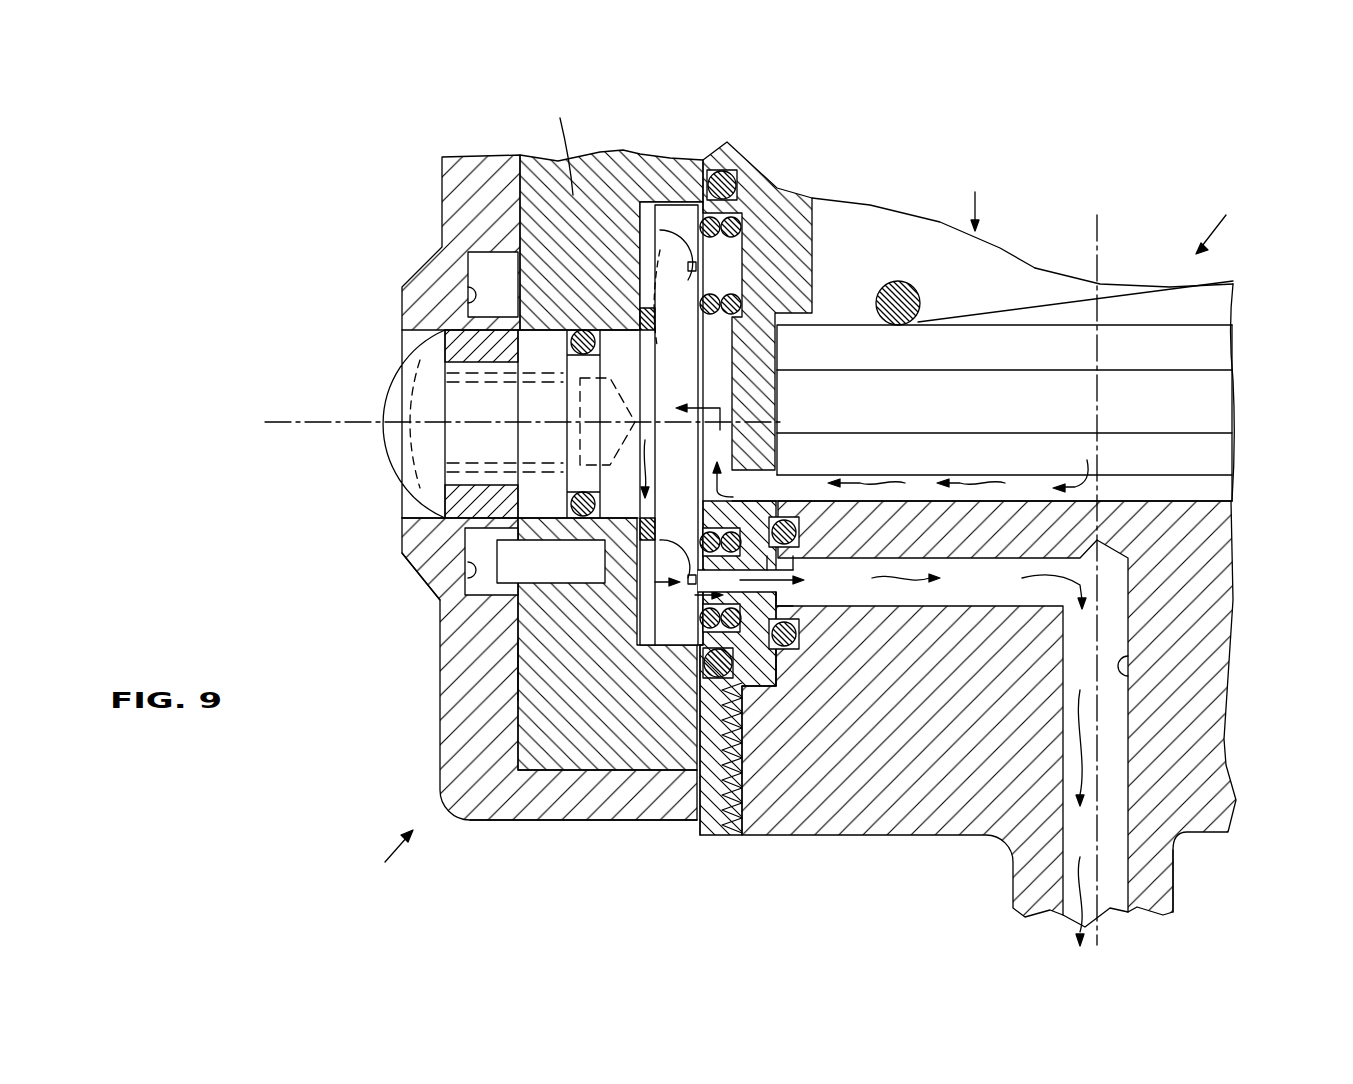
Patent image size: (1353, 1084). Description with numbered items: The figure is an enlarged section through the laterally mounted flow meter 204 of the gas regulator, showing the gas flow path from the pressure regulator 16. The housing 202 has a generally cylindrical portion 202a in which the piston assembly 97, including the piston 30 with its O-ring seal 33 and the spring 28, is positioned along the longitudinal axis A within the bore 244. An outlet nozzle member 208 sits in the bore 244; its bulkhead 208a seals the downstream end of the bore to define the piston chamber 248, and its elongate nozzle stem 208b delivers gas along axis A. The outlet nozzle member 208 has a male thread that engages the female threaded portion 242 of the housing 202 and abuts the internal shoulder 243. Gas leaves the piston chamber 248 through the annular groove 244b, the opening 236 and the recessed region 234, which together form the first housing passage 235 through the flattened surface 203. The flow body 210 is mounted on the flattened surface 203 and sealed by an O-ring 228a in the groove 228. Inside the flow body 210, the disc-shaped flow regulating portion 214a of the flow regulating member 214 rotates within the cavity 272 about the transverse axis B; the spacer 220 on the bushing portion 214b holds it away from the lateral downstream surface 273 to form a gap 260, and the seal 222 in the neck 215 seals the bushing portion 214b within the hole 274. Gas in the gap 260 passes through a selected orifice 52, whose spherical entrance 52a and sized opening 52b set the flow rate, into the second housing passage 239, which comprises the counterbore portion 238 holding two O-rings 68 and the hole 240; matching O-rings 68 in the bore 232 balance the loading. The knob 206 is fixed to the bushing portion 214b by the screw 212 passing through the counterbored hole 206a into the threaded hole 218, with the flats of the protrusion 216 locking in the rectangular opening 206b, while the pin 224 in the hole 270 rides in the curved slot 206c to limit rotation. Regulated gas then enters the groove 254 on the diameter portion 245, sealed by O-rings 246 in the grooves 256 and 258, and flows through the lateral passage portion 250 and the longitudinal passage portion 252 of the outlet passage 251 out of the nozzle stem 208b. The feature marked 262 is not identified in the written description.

The pressure regulator 16 is at (975, 198).
The spring 28 is at (1020, 282).
The piston 30 is at (1215, 348).
The seal 33 is at (1215, 400).
The orifice 52 is at (657, 263).
The spherical entrance 52a is at (657, 643).
The orifice opening 52b is at (687, 590).
The O-ring 68 is at (745, 195).
The piston assembly 97 is at (1218, 221).
The housing 202 is at (795, 255).
The generally cylindrical portion 202a is at (838, 208).
The flattened surface 203 is at (697, 823).
The flow meter 204 is at (379, 859).
The knob 206 is at (433, 745).
The counterbored hole 206a is at (412, 516).
The rectangular opening 206b is at (463, 572).
The curved slot 206c is at (466, 293).
The outlet nozzle member 208 is at (870, 806).
The bulkhead 208a is at (1202, 504).
The nozzle stem 208b is at (1157, 886).
The flow body 210 is at (575, 755).
The screw 212 is at (397, 442).
The flow regulating member 214 is at (683, 205).
The flow regulating portion 214a is at (670, 222).
The bushing portion 214b is at (547, 352).
The neck 215 is at (583, 352).
The protrusion 216 is at (463, 415).
The threaded hole 218 is at (417, 467).
The spacer 220 is at (648, 282).
The seal 222 is at (585, 330).
The pin 224 is at (487, 597).
The groove 228 is at (737, 192).
The seal 228a is at (733, 174).
The bore 232 is at (745, 273).
The recessed region 234 is at (772, 383).
The first housing passage 235 is at (772, 407).
The opening 236 is at (772, 457).
The counterbore portion 238 is at (677, 548).
The second housing passage 239 is at (756, 596).
The hole 240 is at (768, 590).
The female threaded portion 242 is at (742, 815).
The internal shoulder 243 is at (756, 690).
The bore 244 is at (775, 680).
The first groove 244b is at (827, 478).
The diameter portion 245 is at (790, 679).
The sealing member 246 is at (800, 538).
The piston chamber 248 is at (779, 343).
The lateral passage portion 250 is at (800, 275).
The outlet passage 251 is at (1128, 672).
The longitudinal passage portion 252 is at (1112, 902).
The groove 254 is at (793, 571).
The groove 256 is at (808, 530).
The groove 258 is at (800, 640).
The gap 260 is at (513, 653).
The passage wall 262 is at (1212, 490).
The hole 270 is at (525, 612).
The cavity 272 is at (647, 192).
The lateral downstream surface 273 is at (567, 145).
The hole 274 is at (468, 281).
The longitudinal axis A is at (1103, 223).
The transverse axis B is at (283, 423).